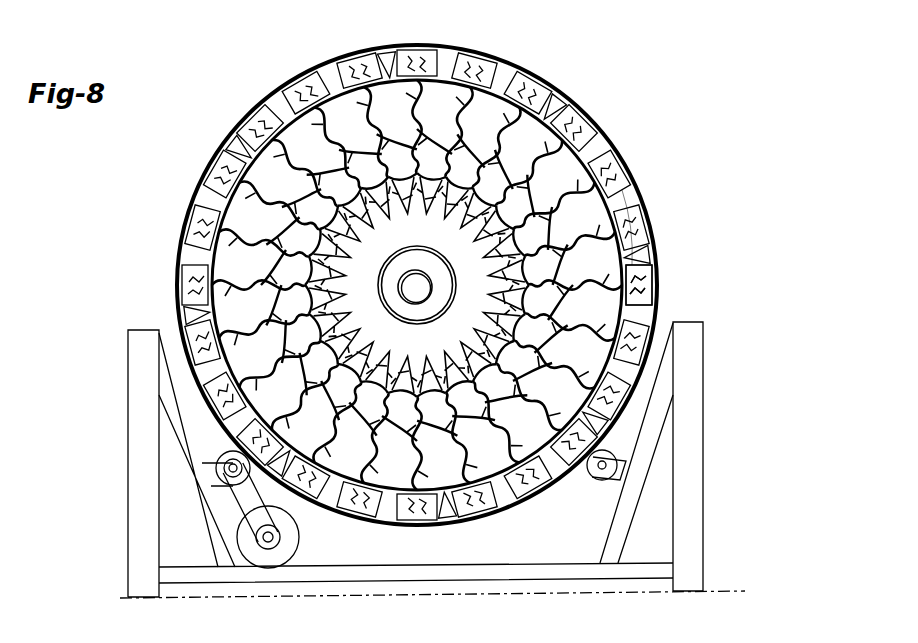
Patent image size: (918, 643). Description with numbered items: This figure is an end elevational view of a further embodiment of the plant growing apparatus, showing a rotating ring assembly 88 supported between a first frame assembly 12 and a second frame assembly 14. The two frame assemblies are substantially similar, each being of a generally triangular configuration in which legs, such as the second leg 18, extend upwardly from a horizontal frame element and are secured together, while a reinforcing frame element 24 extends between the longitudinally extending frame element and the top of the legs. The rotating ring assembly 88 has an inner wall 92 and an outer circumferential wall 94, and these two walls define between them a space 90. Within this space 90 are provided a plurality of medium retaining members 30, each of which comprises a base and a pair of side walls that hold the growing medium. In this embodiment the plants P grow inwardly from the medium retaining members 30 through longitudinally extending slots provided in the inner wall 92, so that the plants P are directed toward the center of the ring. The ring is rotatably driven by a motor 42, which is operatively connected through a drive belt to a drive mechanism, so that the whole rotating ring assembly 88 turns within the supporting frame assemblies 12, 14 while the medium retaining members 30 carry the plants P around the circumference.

The rotating ring assembly 88 is at (632, 103).
The space 90 is at (466, 285).
The inner wall 92 is at (417, 252).
The outer circumferential wall 94 is at (417, 266).
The plants P is at (672, 212).
The medium retaining member 30 is at (681, 276).
The first frame assembly 12 is at (126, 389).
The second leg 18 is at (140, 443).
The second frame assembly 14 is at (706, 440).
The reinforcing frame element 24 is at (210, 517).
The motor 42 is at (243, 543).